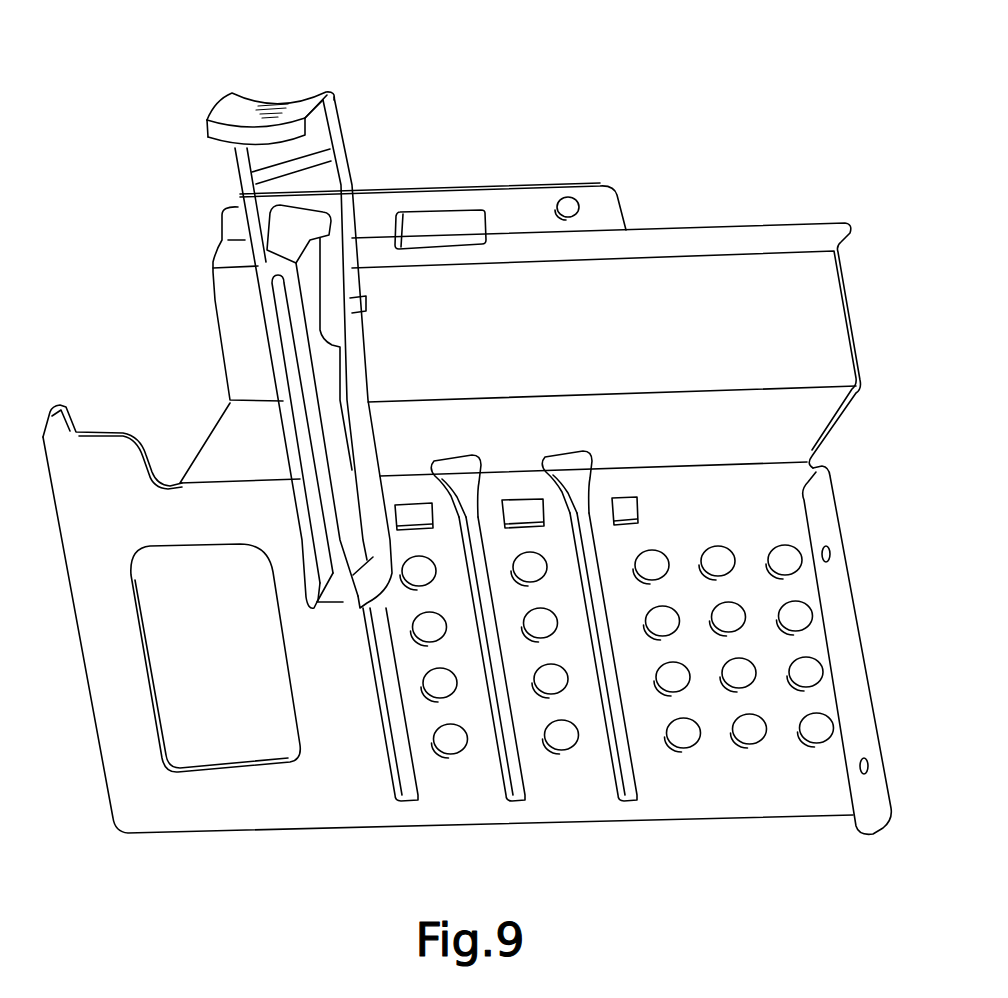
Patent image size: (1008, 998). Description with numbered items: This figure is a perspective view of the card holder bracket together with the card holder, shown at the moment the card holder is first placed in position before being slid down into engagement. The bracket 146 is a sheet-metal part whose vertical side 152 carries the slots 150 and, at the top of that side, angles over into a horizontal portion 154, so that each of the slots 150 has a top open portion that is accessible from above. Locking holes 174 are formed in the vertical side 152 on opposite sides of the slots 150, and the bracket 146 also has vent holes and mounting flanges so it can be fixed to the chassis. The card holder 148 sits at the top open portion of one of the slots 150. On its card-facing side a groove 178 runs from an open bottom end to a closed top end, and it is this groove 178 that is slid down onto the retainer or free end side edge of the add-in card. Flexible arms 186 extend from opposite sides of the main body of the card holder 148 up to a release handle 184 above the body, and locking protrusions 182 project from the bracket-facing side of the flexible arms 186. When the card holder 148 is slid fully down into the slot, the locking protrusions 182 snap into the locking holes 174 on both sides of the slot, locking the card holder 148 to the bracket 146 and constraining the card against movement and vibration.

The bracket 146 is at (742, 210).
The card holder 148 is at (250, 333).
The slots 150 is at (623, 778).
The vertical side 152 is at (342, 787).
The horizontal portion 154 is at (812, 417).
The locking holes 174 is at (623, 513).
The groove 178 is at (313, 481).
The locking protrusions 182 is at (357, 213).
The release handle 184 is at (260, 111).
The flexible arms 186 is at (250, 210).